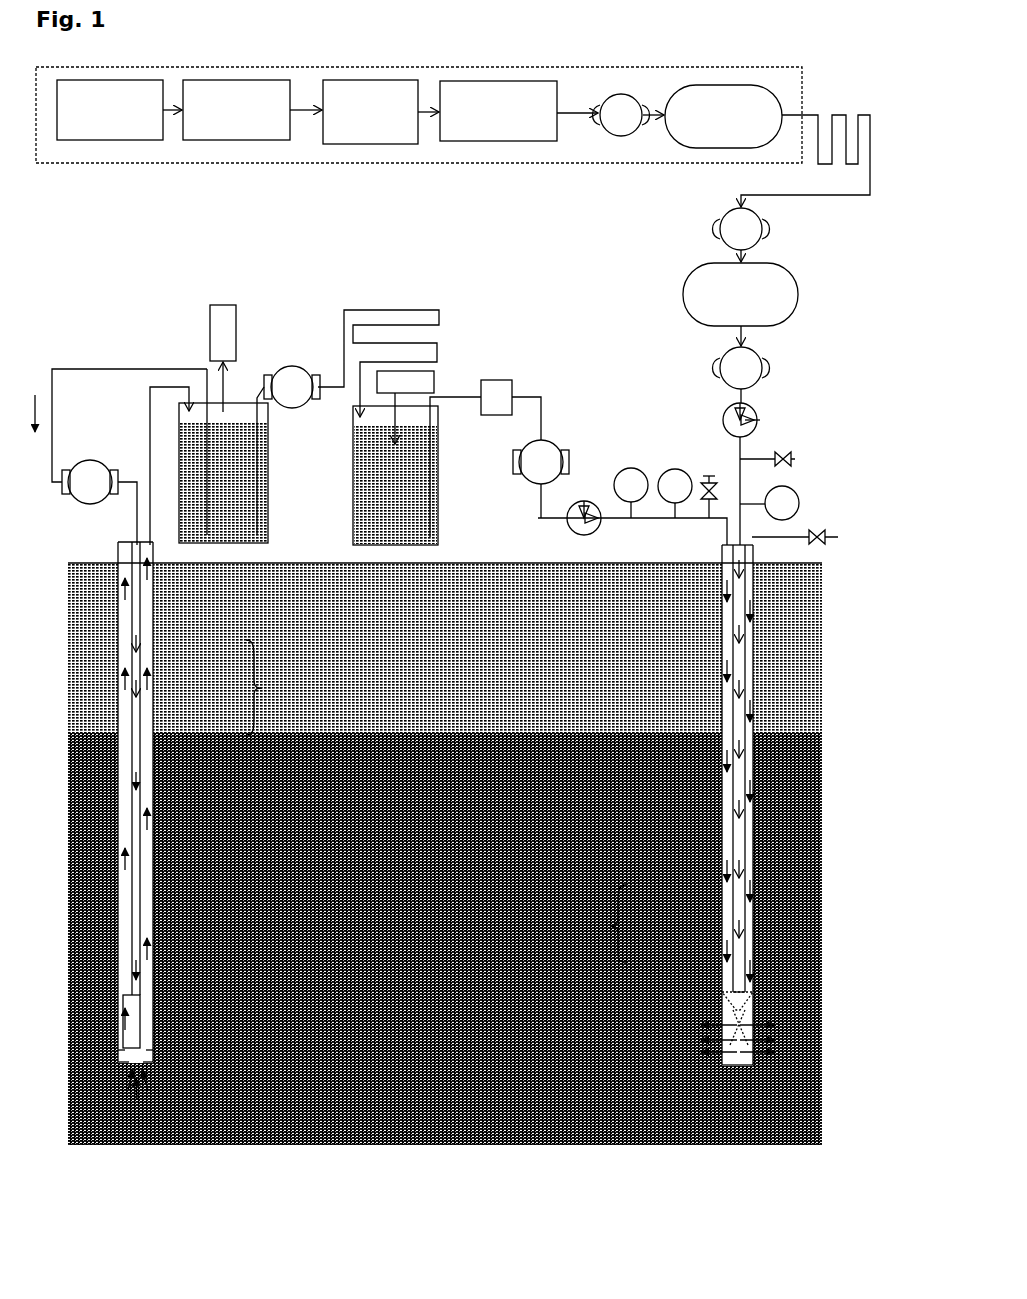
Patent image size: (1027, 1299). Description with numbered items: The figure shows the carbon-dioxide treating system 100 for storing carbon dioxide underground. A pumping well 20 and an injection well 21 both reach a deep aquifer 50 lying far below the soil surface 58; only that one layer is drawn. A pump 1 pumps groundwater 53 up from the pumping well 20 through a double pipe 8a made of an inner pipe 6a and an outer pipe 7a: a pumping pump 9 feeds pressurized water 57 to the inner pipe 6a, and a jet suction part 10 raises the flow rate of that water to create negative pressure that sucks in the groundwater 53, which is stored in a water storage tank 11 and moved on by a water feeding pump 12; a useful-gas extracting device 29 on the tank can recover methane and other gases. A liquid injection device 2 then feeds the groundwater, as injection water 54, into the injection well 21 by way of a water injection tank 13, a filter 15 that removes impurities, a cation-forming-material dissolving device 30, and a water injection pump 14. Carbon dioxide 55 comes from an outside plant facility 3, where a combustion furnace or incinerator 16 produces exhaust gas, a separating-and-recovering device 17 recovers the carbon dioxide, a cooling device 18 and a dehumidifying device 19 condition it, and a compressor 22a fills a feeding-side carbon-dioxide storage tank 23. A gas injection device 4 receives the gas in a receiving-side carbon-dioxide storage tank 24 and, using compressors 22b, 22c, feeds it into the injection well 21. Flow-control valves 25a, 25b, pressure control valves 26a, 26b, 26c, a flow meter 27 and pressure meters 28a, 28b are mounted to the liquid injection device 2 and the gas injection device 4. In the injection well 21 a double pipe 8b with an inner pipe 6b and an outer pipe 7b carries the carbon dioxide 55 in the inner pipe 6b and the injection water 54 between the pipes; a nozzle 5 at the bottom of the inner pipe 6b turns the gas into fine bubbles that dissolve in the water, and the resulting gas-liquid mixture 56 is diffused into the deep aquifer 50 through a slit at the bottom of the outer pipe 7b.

The carbon-dioxide treating system 100 is at (159, 239).
The pump 1 is at (137, 324).
The liquid injection device 2 is at (507, 304).
The plant facility 3 is at (334, 165).
The gas injection device 4 is at (658, 344).
The nozzle 5 is at (717, 993).
The inner pipe 6a is at (155, 702).
The inner pipe 6b is at (733, 895).
The outer pipe 7a is at (155, 738).
The outer pipe 7b is at (722, 930).
The double pipe 8a is at (282, 687).
The double pipe 8b is at (599, 923).
The pumping pump 9 is at (92, 460).
The jet suction part 10 is at (140, 1025).
The water storage tank 11 is at (268, 463).
The water feeding pump 12 is at (296, 366).
The water injection tank 13 is at (438, 458).
The water injection pump 14 is at (560, 445).
The filter 15 is at (496, 380).
The combustion furnace or incinerator 16 is at (163, 67).
The carbon-dioxide separating-and-recovering device 17 is at (268, 67).
The cooling device 18 is at (372, 80).
The dehumidifying device 19 is at (492, 81).
The pumping well 20 is at (218, 802).
The injection well 21 is at (649, 825).
The compressor 22a is at (628, 94).
The compressor 22b is at (720, 218).
The compressor 22c is at (772, 363).
The feeding-side carbon-dioxide storage tank 23 is at (748, 85).
The receiving-side carbon-dioxide storage tank 24 is at (795, 270).
The flow-control valve 25a is at (597, 530).
The flow-control valve 25b is at (757, 417).
The pressure control valve 26a is at (709, 483).
The pressure control valve 26b is at (791, 459).
The pressure control valve 26c is at (824, 537).
The flow meter 27 is at (624, 468).
The pressure meter 28a is at (673, 470).
The pressure meter 28b is at (799, 503).
The useful-gas extracting device 29 is at (210, 325).
The cation-forming-material dissolving device 30 is at (434, 382).
The deep aquifer 50 is at (371, 1146).
The groundwater 53 is at (232, 492).
The injection water 54 is at (722, 660).
The carbon dioxide 55 is at (735, 848).
The gas-liquid mixture 56 is at (720, 1055).
The pressurized water 57 is at (150, 782).
The soil surface 58 is at (462, 563).